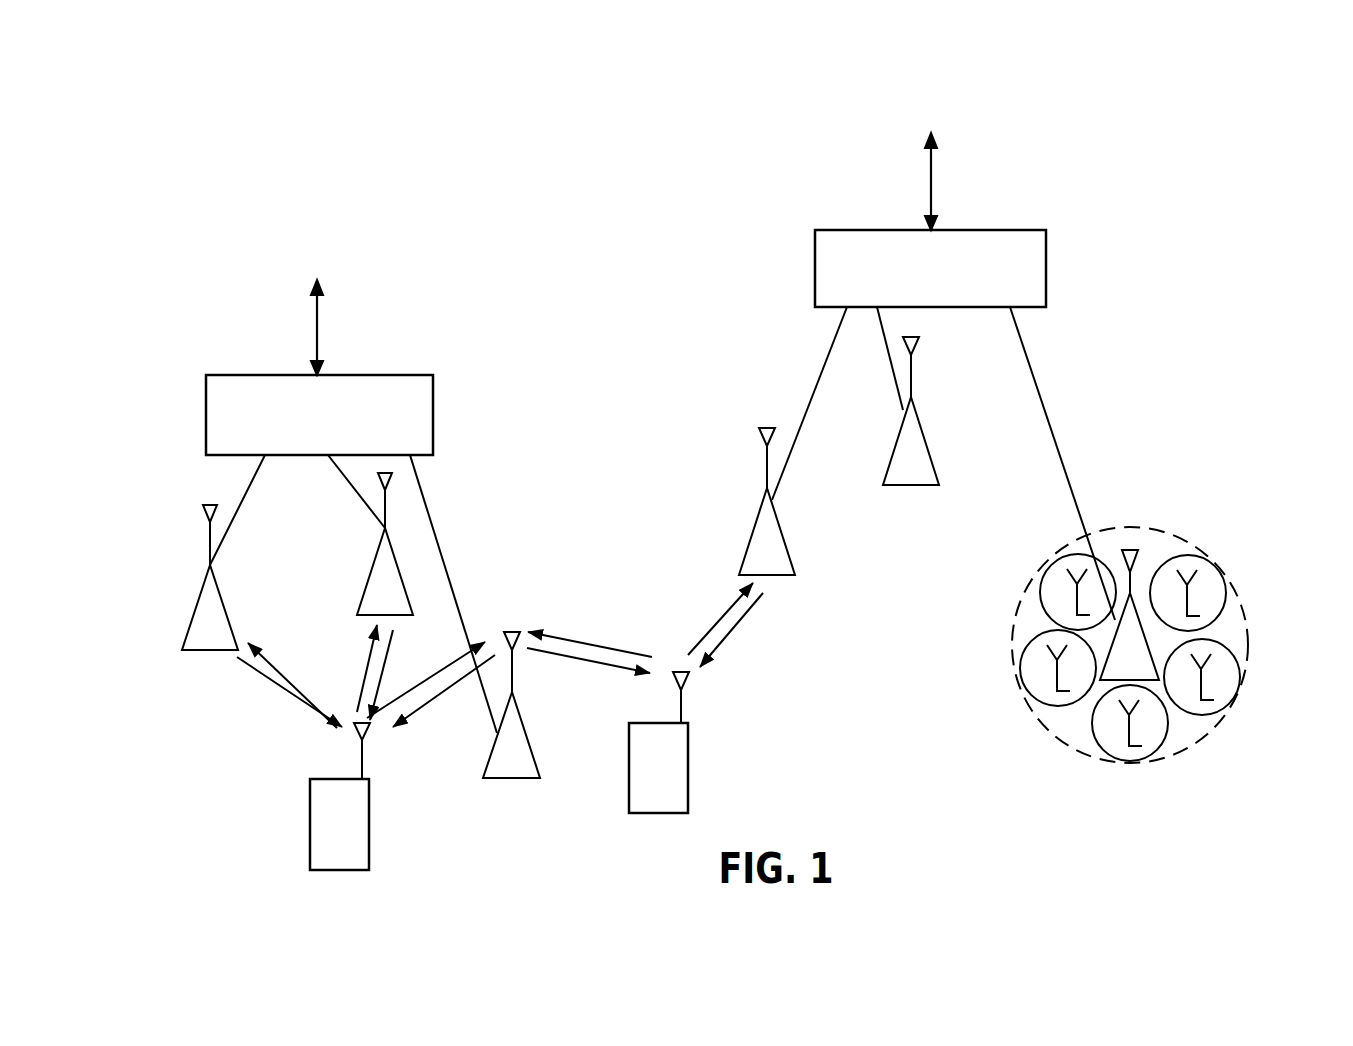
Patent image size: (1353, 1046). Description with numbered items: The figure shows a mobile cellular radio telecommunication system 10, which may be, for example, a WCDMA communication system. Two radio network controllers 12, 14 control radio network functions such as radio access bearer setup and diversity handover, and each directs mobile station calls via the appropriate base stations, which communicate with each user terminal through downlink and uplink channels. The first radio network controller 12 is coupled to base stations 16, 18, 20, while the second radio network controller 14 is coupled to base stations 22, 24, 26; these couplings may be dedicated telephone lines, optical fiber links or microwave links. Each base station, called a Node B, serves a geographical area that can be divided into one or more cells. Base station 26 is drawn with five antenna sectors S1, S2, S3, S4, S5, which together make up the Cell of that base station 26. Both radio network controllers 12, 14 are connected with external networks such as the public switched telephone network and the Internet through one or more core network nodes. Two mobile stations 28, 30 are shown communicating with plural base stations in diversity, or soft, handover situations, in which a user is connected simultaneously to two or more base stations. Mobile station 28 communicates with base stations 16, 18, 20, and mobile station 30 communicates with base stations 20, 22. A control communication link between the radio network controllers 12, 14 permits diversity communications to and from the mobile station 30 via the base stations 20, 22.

The mobile cellular radio telecommunication system 10 is at (181, 323).
The radio network controller 12 is at (424, 439).
The radio network controller 14 is at (1036, 293).
The base station 16 is at (203, 585).
The base station 18 is at (372, 576).
The base station 20 is at (522, 715).
The base station 22 is at (782, 530).
The base station 24 is at (918, 420).
The base station 26 is at (1138, 582).
The mobile station 28 is at (310, 808).
The mobile station 30 is at (629, 752).
The antenna sector S1 is at (1208, 560).
The antenna sector S2 is at (1228, 706).
The antenna sector S3 is at (1167, 742).
The antenna sector S4 is at (1018, 670).
The antenna sector S5 is at (1030, 587).
The cell Cell is at (1243, 598).